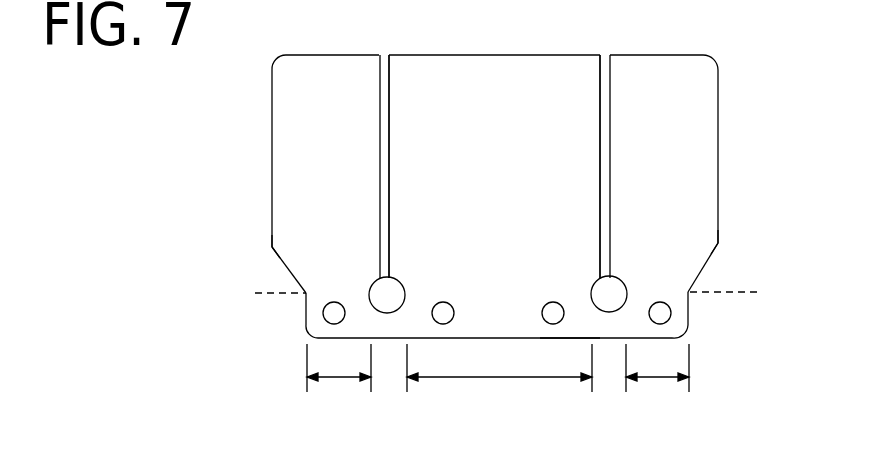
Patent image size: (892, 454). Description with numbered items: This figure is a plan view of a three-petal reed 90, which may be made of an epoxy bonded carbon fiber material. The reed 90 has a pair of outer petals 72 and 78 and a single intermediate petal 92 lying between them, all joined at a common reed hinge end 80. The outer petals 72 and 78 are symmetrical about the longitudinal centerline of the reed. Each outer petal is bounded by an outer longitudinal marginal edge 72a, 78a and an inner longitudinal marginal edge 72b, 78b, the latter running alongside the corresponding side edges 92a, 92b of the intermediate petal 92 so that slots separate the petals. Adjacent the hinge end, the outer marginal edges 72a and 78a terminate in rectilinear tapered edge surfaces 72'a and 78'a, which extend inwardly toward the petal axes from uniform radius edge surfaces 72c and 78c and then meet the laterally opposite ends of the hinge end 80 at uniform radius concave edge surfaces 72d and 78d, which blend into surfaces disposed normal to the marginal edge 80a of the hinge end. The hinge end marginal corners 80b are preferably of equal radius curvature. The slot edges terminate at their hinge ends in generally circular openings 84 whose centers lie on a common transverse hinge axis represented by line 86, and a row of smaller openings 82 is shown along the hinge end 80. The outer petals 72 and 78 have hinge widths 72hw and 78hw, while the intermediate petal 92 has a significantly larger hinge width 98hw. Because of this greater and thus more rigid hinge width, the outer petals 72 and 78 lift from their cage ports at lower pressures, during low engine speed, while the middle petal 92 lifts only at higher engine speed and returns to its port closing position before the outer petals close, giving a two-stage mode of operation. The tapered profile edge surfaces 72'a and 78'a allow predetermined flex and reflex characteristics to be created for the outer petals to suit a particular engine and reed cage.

The three-petal reed 90 is at (272, 49).
The outer petal 72 is at (325, 39).
The outer longitudinal marginal edge 72a is at (271, 120).
The longitudinal marginal edge 72b is at (382, 95).
The uniform radius edge surface 72c is at (272, 247).
The tapered edge surface 72'a is at (265, 270).
The uniform radius concave edge surface 72d is at (306, 300).
The hinge width 72hw is at (340, 377).
The outer petal 78 is at (664, 40).
The outer longitudinal marginal edge 78a is at (716, 82).
The longitudinal marginal edge 78b is at (608, 95).
The uniform radius edge surface 78c is at (718, 243).
The tapered edge surface 78'a is at (733, 267).
The uniform radius concave edge surface 78d is at (690, 297).
The hinge width 78hw is at (660, 377).
The reed hinge end 80 is at (512, 339).
The marginal edge of hinge end 80a is at (570, 339).
The hinge end marginal corners 80b is at (307, 331).
The mounting holes 82 is at (334, 324).
The generally circular openings 84 is at (387, 313).
The transverse hinge axis line 86 is at (489, 295).
The intermediate petal 92 is at (457, 70).
The first side edge of central web 92a is at (388, 93).
The second side edge of central web 92b is at (600, 70).
The hinge width 98hw is at (480, 377).